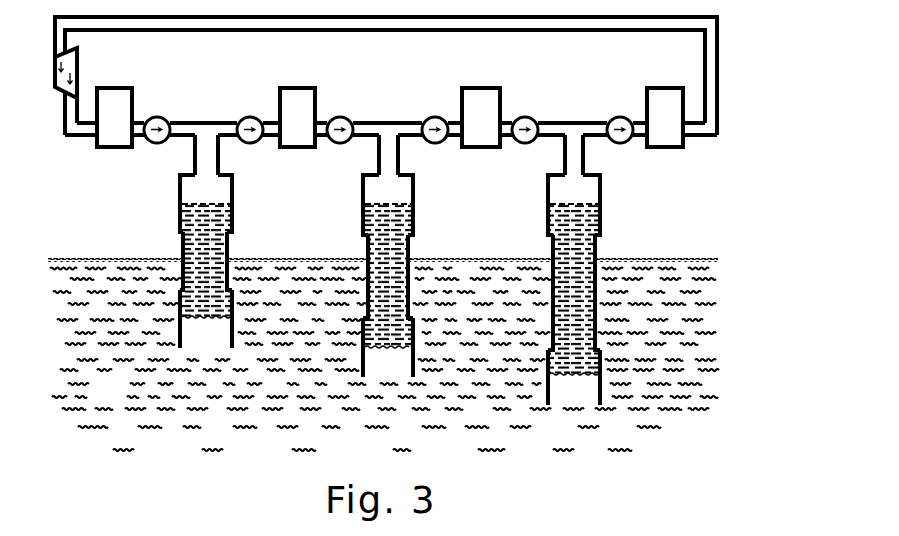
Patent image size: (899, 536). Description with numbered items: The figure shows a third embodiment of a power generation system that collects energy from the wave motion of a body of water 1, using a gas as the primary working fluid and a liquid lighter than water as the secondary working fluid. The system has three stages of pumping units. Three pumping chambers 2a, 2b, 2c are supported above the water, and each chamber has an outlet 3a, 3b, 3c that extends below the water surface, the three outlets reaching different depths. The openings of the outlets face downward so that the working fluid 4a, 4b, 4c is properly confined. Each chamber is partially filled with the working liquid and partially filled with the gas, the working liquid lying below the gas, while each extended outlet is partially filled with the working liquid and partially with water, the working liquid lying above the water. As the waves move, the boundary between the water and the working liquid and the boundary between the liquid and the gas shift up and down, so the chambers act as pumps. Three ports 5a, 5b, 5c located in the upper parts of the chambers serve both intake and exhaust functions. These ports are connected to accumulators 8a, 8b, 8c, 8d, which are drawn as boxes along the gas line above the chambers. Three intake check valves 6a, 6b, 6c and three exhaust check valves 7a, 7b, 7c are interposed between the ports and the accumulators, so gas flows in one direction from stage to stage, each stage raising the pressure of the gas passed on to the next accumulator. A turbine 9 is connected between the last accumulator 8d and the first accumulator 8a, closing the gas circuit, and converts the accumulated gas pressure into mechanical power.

The body of water 1 is at (119, 396).
The pumping chamber 2a is at (212, 199).
The pumping chamber 2b is at (395, 199).
The pumping chamber 2c is at (579, 199).
The outlet 3a is at (212, 339).
The outlet 3b is at (395, 367).
The outlet 3c is at (579, 397).
The working fluid 4a is at (212, 256).
The working fluid 4b is at (395, 256).
The working fluid 4c is at (579, 256).
The port 5a is at (206, 176).
The port 5b is at (392, 177).
The port 5c is at (576, 178).
The intake check valve 6a is at (149, 118).
The intake check valve 6b is at (333, 118).
The intake check valve 6c is at (518, 118).
The exhaust check valve 7a is at (258, 118).
The exhaust check valve 7b is at (443, 118).
The exhaust check valve 7c is at (627, 118).
The accumulator 8a is at (109, 88).
The accumulator 8b is at (291, 88).
The accumulator 8c is at (478, 88).
The accumulator 8d is at (657, 88).
The turbine 9 is at (56, 74).